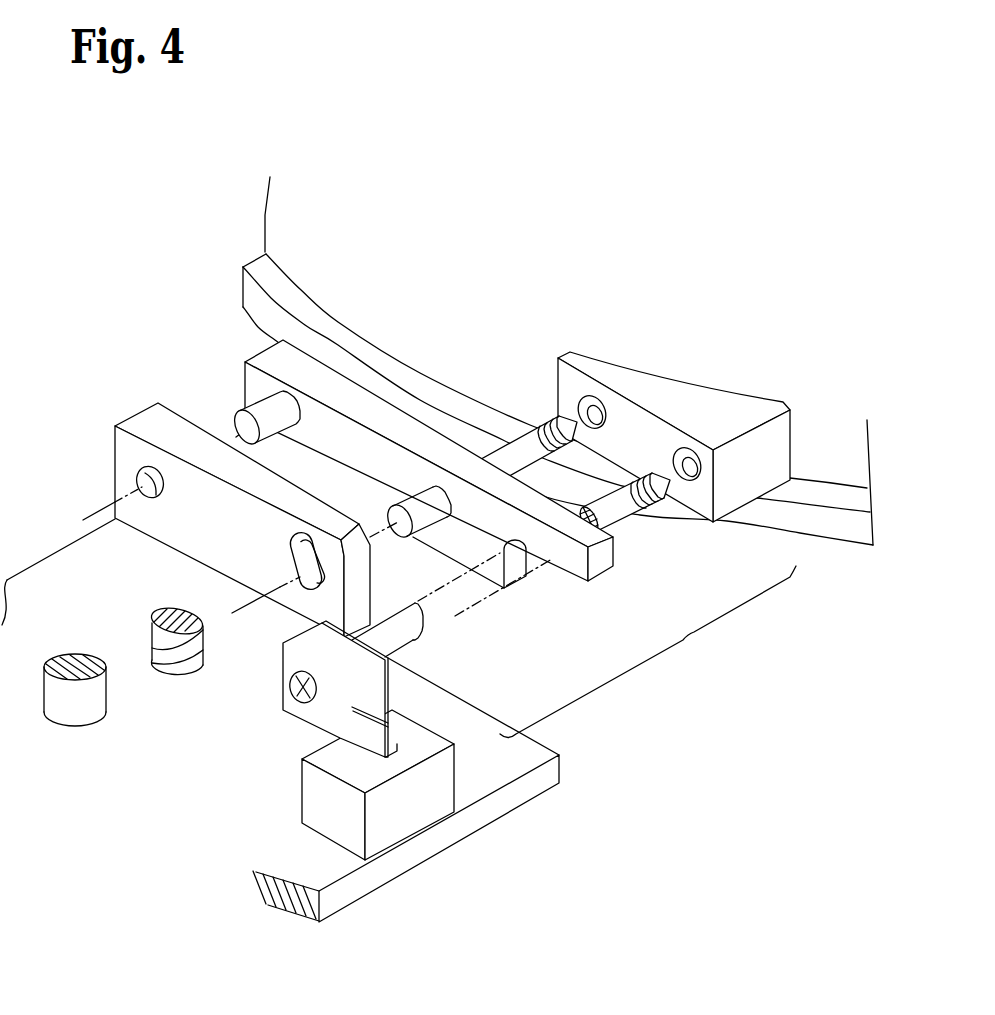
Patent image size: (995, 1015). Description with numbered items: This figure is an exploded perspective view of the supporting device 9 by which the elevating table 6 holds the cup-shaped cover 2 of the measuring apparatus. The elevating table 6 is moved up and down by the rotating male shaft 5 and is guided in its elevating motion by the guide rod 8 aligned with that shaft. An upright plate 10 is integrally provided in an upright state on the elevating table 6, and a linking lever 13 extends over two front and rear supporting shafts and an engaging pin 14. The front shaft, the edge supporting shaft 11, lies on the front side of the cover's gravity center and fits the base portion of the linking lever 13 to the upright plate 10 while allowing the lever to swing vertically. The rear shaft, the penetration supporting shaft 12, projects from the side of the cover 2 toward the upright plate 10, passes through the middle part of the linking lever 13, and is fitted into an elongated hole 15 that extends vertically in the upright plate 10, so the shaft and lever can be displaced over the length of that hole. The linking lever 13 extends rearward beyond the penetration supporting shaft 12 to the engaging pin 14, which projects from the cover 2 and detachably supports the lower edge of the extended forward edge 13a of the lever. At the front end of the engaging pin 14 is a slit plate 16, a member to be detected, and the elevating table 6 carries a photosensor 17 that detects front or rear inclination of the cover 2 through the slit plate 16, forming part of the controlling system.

The cover 2 is at (647, 335).
The male shaft 5 is at (165, 612).
The elevating table 6 is at (517, 798).
The guide rod 8 is at (83, 714).
The supporting device 9 is at (648, 652).
The upright plate 10 is at (152, 415).
The edge supporting shaft 11 is at (247, 428).
The penetration supporting shaft 12 is at (503, 450).
The linking lever 13 is at (350, 390).
The extended forward edge 13a is at (564, 571).
The engaging pin 14 is at (627, 508).
The elongated hole 15 is at (300, 587).
The slit plate 16 is at (312, 713).
The photosensor 17 is at (413, 810).